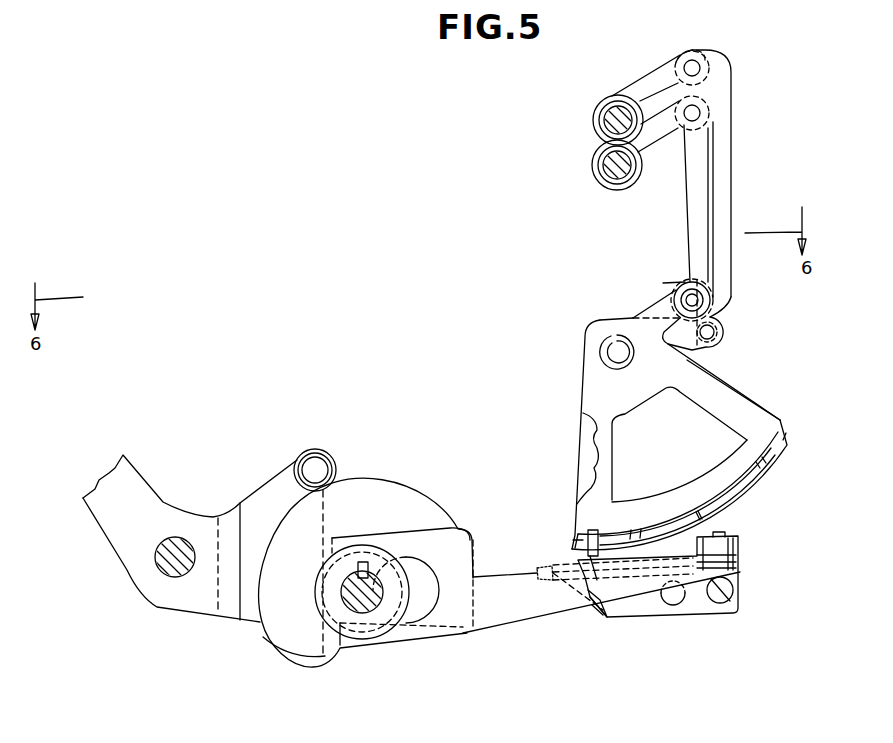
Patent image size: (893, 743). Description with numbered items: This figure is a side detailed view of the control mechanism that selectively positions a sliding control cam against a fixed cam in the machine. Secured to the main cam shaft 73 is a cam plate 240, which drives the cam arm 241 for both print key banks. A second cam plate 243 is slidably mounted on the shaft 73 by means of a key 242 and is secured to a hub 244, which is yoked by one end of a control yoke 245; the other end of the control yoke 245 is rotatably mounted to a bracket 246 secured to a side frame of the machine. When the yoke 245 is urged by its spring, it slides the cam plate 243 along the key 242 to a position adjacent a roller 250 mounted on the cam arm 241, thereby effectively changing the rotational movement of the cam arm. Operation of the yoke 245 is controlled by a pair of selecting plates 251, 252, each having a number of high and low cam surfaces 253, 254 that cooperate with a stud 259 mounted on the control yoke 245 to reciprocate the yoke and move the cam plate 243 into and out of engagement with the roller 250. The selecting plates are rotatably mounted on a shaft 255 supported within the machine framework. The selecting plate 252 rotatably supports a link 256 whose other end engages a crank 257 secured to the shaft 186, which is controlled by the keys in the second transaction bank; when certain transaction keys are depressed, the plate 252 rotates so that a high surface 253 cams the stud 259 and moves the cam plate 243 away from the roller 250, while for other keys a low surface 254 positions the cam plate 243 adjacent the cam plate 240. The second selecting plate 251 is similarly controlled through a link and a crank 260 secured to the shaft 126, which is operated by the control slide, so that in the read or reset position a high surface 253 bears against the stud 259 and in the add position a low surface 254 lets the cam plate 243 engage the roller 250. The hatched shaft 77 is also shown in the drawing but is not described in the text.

The main cam shaft 73 is at (372, 600).
The shaft 77 is at (173, 575).
The shaft 126 is at (598, 175).
The shaft 186 is at (604, 108).
The cam plate 240 is at (307, 650).
The cam arm 241 is at (262, 502).
The key 242 is at (363, 562).
The second cam plate 243 is at (372, 480).
The hub 244 is at (370, 634).
The control yoke 245 is at (532, 607).
The bracket 246 is at (735, 575).
The roller 250 is at (322, 450).
The second selecting plate 251 is at (585, 445).
The selecting plate 252 is at (595, 389).
The high cam surface 253 is at (773, 417).
The low cam surface 254 is at (668, 533).
The shaft 255 is at (610, 350).
The link 256 is at (738, 186).
The crank 257 is at (643, 80).
The stud 259 is at (580, 520).
The crank 260 is at (653, 165).